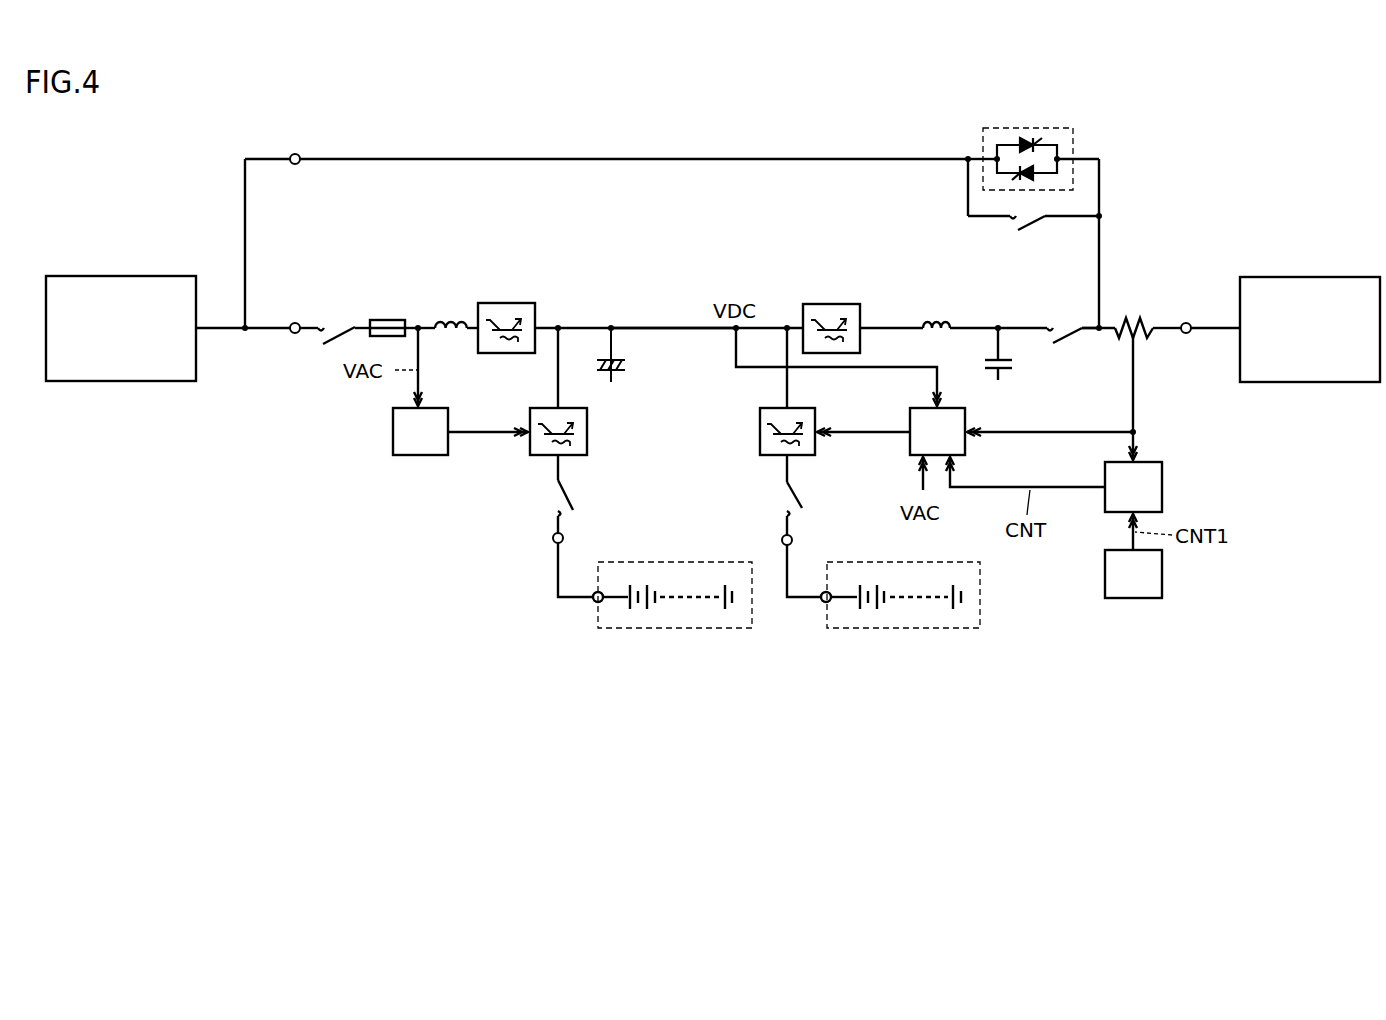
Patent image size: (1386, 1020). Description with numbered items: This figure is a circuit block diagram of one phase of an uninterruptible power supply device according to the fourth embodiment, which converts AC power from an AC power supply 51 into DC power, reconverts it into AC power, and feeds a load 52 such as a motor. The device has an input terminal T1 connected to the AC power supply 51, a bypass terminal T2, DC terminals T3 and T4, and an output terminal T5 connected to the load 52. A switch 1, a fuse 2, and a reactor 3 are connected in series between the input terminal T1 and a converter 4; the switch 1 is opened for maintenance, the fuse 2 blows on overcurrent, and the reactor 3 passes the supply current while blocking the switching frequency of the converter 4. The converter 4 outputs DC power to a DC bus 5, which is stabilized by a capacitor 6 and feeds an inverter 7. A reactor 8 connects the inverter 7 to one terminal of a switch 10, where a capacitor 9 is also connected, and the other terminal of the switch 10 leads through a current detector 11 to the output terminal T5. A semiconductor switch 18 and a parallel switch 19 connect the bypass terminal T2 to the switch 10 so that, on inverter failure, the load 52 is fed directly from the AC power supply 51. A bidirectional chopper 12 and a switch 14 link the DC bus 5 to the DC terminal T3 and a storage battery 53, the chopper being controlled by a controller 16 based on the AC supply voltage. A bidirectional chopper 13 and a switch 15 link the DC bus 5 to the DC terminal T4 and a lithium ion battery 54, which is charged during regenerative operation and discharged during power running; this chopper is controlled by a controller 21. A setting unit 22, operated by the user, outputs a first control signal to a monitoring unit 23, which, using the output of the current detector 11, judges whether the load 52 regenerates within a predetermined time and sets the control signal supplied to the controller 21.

The switch 1 is at (338, 320).
The fuse 2 is at (386, 320).
The reactor 3 is at (449, 320).
The converter 4 is at (507, 303).
The DC bus 5 is at (683, 326).
The capacitor 6 is at (623, 355).
The inverter 7 is at (833, 304).
The reactor 8 is at (937, 320).
The capacitor 9 is at (1000, 372).
The switch 10 is at (1072, 340).
The current detector 11 is at (1147, 320).
The bidirectional chopper 12 is at (590, 432).
The bidirectional chopper 13 is at (759, 432).
The switch 14 is at (575, 500).
The switch 15 is at (805, 500).
The controller 16 is at (420, 431).
The semiconductor switch 18 is at (1027, 128).
The switch 19 is at (1032, 225).
The controller 21 is at (937, 431).
The setting unit 22 is at (1133, 574).
The monitoring unit 23 is at (1133, 487).
The AC power supply 51 is at (127, 276).
The load 52 is at (1308, 277).
The storage battery 53 is at (677, 628).
The lithium ion battery 54 is at (905, 628).
The input terminal T1 is at (295, 335).
The bypass terminal T2 is at (295, 152).
The DC terminal T3 is at (552, 538).
The DC terminal T4 is at (781, 540).
The output terminal T5 is at (1186, 335).